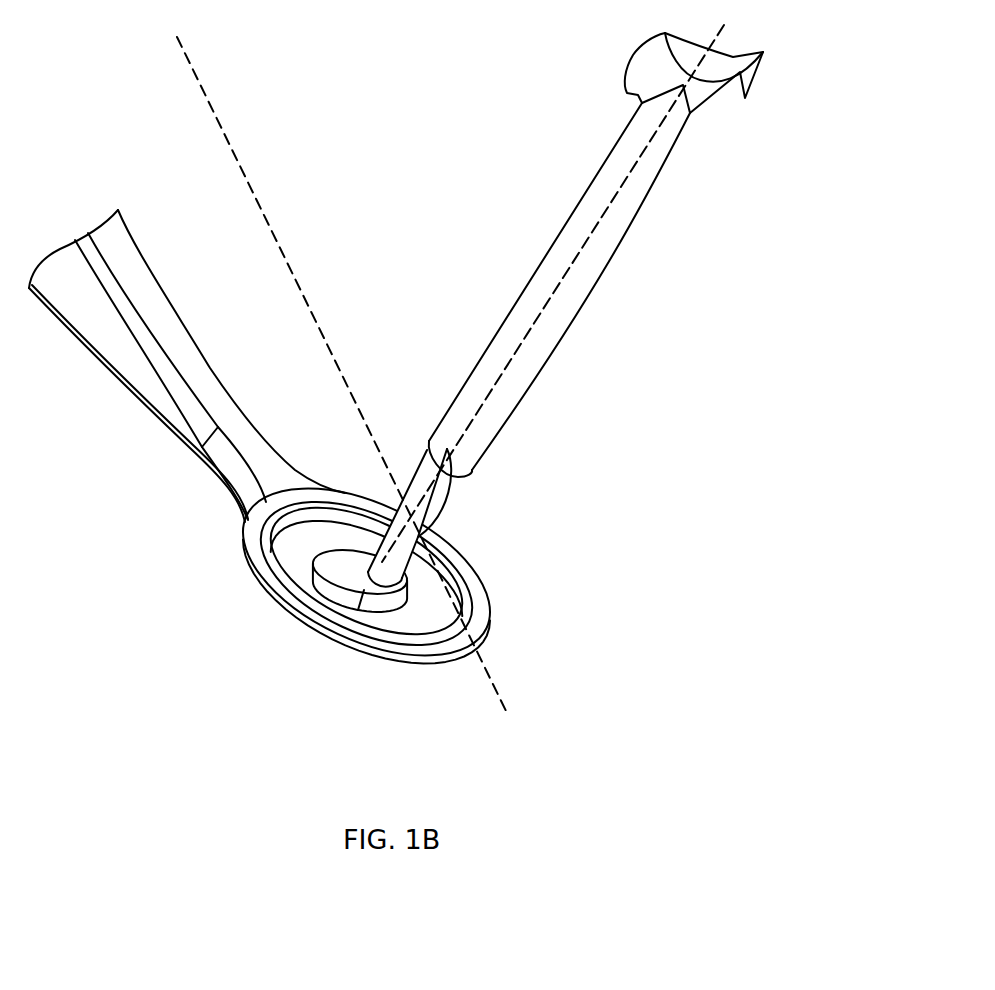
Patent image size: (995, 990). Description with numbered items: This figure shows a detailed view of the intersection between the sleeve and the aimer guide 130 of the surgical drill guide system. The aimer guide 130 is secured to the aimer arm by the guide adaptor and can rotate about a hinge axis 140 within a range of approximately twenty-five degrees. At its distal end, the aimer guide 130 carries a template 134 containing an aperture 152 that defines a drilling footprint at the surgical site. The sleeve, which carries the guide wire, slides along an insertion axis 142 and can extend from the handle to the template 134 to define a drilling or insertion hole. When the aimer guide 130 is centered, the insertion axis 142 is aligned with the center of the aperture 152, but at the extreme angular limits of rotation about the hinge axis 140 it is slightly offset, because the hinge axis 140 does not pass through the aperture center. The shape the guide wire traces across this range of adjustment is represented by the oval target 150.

The aimer guide 130 is at (157, 392).
The template 134 is at (310, 615).
The hinge axis 140 is at (253, 198).
The insertion axis 142 is at (533, 332).
The oval target 150 is at (338, 561).
The aperture 152 is at (426, 619).